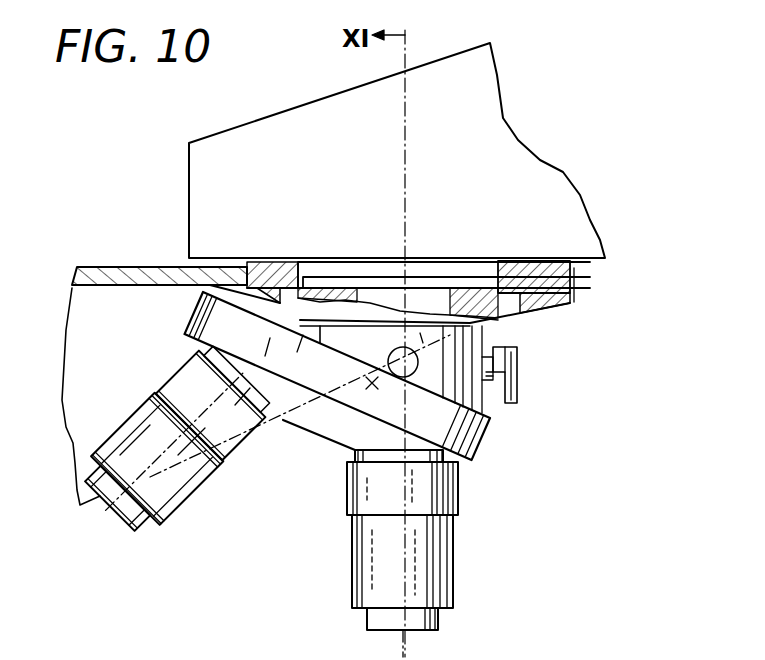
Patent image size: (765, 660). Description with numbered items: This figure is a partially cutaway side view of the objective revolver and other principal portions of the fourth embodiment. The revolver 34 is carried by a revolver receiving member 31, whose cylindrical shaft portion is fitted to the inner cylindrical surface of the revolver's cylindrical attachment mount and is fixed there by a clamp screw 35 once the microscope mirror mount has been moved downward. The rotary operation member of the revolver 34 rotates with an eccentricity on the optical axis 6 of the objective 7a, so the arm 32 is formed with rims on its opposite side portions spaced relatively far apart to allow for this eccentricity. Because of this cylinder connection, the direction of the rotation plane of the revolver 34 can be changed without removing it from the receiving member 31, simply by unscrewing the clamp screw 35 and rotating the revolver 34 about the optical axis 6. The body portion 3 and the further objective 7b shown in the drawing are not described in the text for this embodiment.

The microscope body / stand 3 is at (531, 185).
The optical axis 6 is at (406, 642).
The objective 7a is at (440, 572).
The inclined eyepiece tube 7b is at (197, 497).
The revolver receiving member 31 is at (570, 270).
The arm 32 is at (123, 267).
The revolver 34 is at (493, 440).
The clamp screw 35 is at (517, 360).